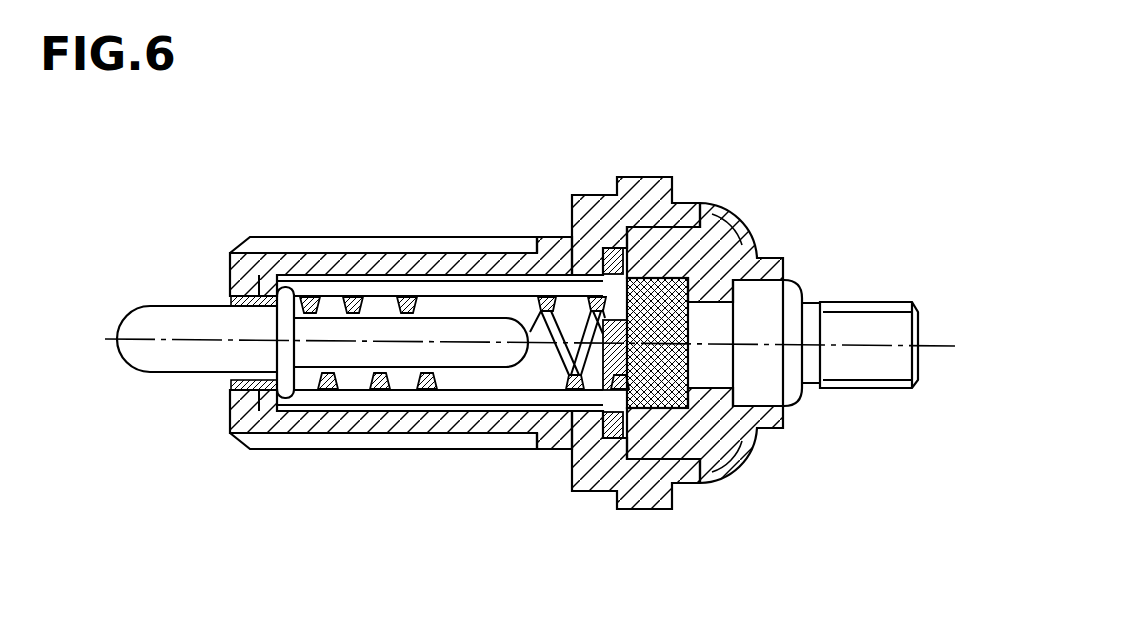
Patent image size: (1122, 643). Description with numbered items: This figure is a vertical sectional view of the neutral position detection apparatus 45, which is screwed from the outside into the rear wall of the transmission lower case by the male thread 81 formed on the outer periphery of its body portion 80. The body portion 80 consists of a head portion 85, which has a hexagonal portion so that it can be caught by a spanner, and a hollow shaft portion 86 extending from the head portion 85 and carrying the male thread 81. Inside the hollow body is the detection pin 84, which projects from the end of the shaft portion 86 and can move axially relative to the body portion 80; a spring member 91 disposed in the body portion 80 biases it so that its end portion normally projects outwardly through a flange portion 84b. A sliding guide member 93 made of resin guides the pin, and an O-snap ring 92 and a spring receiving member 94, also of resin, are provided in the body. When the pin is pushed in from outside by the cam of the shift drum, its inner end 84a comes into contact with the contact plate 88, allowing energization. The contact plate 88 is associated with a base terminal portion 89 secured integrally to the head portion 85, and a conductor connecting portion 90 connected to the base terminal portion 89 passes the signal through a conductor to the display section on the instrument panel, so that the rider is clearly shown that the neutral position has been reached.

The neutral position detection apparatus 45 is at (855, 183).
The body portion 80 is at (514, 216).
The male thread 81 is at (323, 248).
The detection pin 84 is at (162, 350).
The inner end 84a is at (515, 350).
The flange portion 84b is at (272, 396).
The head portion 85 is at (637, 192).
The hollow shaft portion 86 is at (412, 265).
The contact plate 88 is at (569, 392).
The base terminal portion 89 is at (697, 440).
The conductor connecting portion 90 is at (862, 358).
The spring member 91 is at (377, 389).
The O-snap ring 92 is at (613, 422).
The sliding guide member 93 is at (232, 290).
The spring receiving member 94 is at (660, 278).